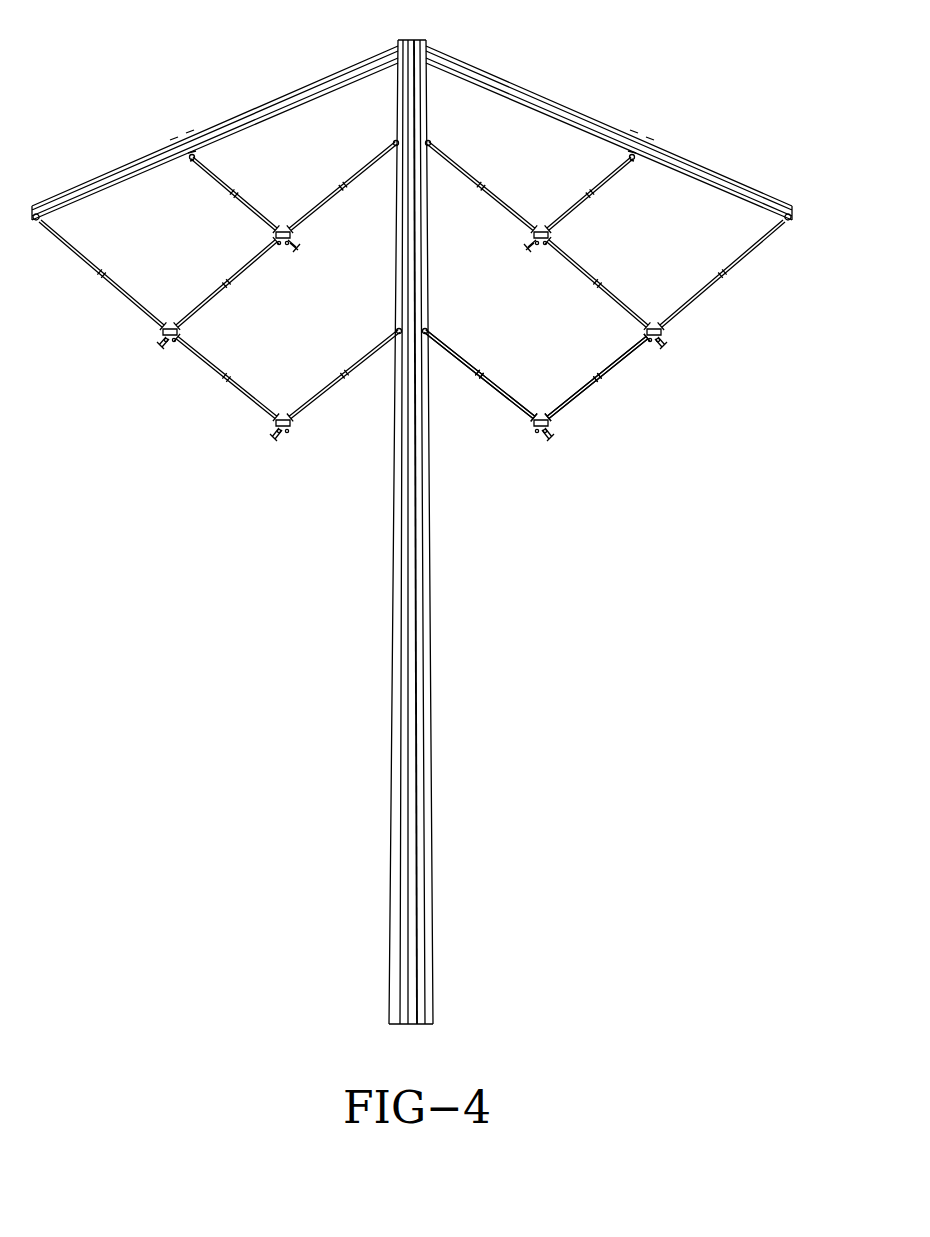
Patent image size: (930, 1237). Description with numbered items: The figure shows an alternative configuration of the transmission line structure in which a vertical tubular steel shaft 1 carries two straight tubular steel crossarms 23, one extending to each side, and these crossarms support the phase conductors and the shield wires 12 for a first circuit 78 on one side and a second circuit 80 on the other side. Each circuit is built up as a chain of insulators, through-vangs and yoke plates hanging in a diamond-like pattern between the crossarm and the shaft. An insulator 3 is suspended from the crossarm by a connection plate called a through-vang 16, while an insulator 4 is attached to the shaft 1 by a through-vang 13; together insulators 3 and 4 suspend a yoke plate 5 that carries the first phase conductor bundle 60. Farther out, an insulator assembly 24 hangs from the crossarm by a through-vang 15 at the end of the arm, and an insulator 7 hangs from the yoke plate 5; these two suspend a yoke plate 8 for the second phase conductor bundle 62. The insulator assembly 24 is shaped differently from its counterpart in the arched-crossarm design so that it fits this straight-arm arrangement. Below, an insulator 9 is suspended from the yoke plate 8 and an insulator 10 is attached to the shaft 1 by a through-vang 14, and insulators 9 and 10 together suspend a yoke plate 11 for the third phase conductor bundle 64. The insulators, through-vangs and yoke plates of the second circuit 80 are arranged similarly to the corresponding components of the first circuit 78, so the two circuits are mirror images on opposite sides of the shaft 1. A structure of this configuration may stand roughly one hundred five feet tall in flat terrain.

The tubular steel shaft 1 is at (413, 773).
The straight tubular steel crossarms 23 is at (272, 112).
The shield wires 12 is at (173, 140).
The through-vang 16 is at (192, 158).
The through-vang 13 is at (396, 142).
The through-vang 14 is at (397, 330).
The insulator 4 is at (337, 193).
The insulator 3 is at (247, 205).
The insulator 7 is at (232, 285).
The through-vang 15 is at (42, 215).
The insulator assembly 24 is at (412, 293).
The insulator 9 is at (223, 375).
The insulator 10 is at (336, 388).
The yoke plate 5 is at (298, 246).
The yoke plate 8 is at (163, 343).
The yoke plate 11 is at (290, 438).
The first phase conductor bundle 60 is at (283, 258).
The second phase conductor bundle 62 is at (175, 352).
The third phase conductor bundle 64 is at (278, 447).
The first circuit 78 is at (409, 511).
The second circuit 80 is at (540, 511).